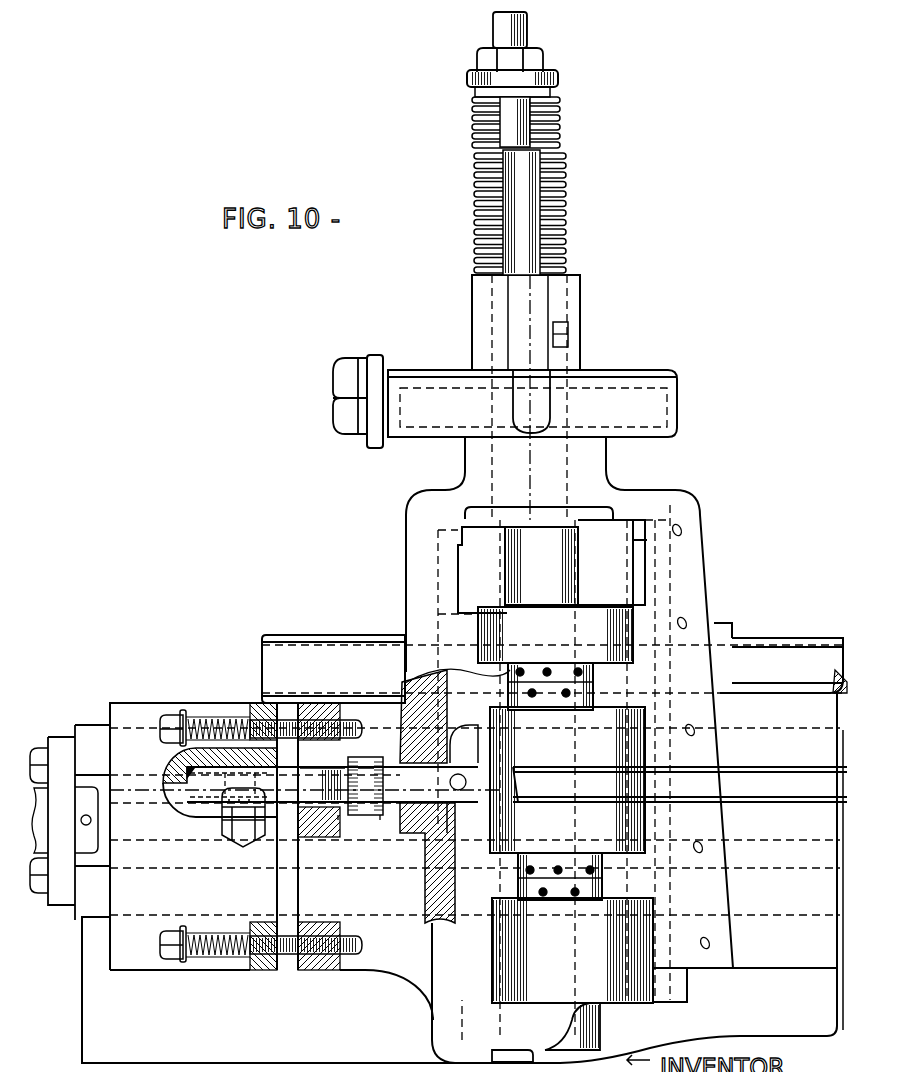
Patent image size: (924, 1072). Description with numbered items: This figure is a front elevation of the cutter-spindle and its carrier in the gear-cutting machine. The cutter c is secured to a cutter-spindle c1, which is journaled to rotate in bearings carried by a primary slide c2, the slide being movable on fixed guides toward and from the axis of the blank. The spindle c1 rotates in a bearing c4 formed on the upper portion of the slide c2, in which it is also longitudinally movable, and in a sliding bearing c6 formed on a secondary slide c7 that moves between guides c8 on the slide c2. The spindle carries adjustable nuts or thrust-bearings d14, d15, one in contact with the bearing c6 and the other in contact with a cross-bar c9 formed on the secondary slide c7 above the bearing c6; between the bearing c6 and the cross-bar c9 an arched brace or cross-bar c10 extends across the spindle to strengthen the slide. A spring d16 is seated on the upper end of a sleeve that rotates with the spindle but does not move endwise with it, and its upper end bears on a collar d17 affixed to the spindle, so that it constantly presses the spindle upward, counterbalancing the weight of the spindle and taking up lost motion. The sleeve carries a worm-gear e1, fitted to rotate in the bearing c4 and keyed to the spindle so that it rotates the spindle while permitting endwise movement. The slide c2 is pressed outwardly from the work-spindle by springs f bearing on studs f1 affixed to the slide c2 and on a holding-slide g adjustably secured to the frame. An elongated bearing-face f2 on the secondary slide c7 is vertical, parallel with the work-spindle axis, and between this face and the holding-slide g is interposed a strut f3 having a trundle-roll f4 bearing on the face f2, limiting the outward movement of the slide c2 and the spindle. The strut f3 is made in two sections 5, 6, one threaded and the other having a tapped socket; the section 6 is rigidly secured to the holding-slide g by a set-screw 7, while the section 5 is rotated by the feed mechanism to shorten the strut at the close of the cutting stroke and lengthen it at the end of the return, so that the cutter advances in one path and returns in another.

The cutter c is at (480, 1013).
The cutter-spindle c1 is at (578, 557).
The primary slide c2 is at (435, 985).
The bearing c4 is at (606, 462).
The sliding bearing c6 is at (572, 950).
The secondary slide c7 is at (658, 978).
The guides c8 is at (462, 588).
The cross-bar c9 is at (555, 635).
The arched brace or cross-bar c10 is at (567, 780).
The adjustable nut or thrust-bearing d14 is at (517, 895).
The adjustable nut or thrust-bearing d15 is at (505, 672).
The spring d16 is at (563, 190).
The collar d17 is at (560, 78).
The worm-gear e1 is at (680, 404).
The springs f is at (206, 728).
The studs f1 is at (172, 716).
The elongated bearing-face f2 is at (418, 840).
The strut f3 is at (365, 774).
The trundle-roll f4 is at (462, 779).
The holding-slide g is at (126, 962).
The strut section 5 is at (385, 825).
The strut section 6 is at (338, 825).
The set-screw 7 is at (240, 836).